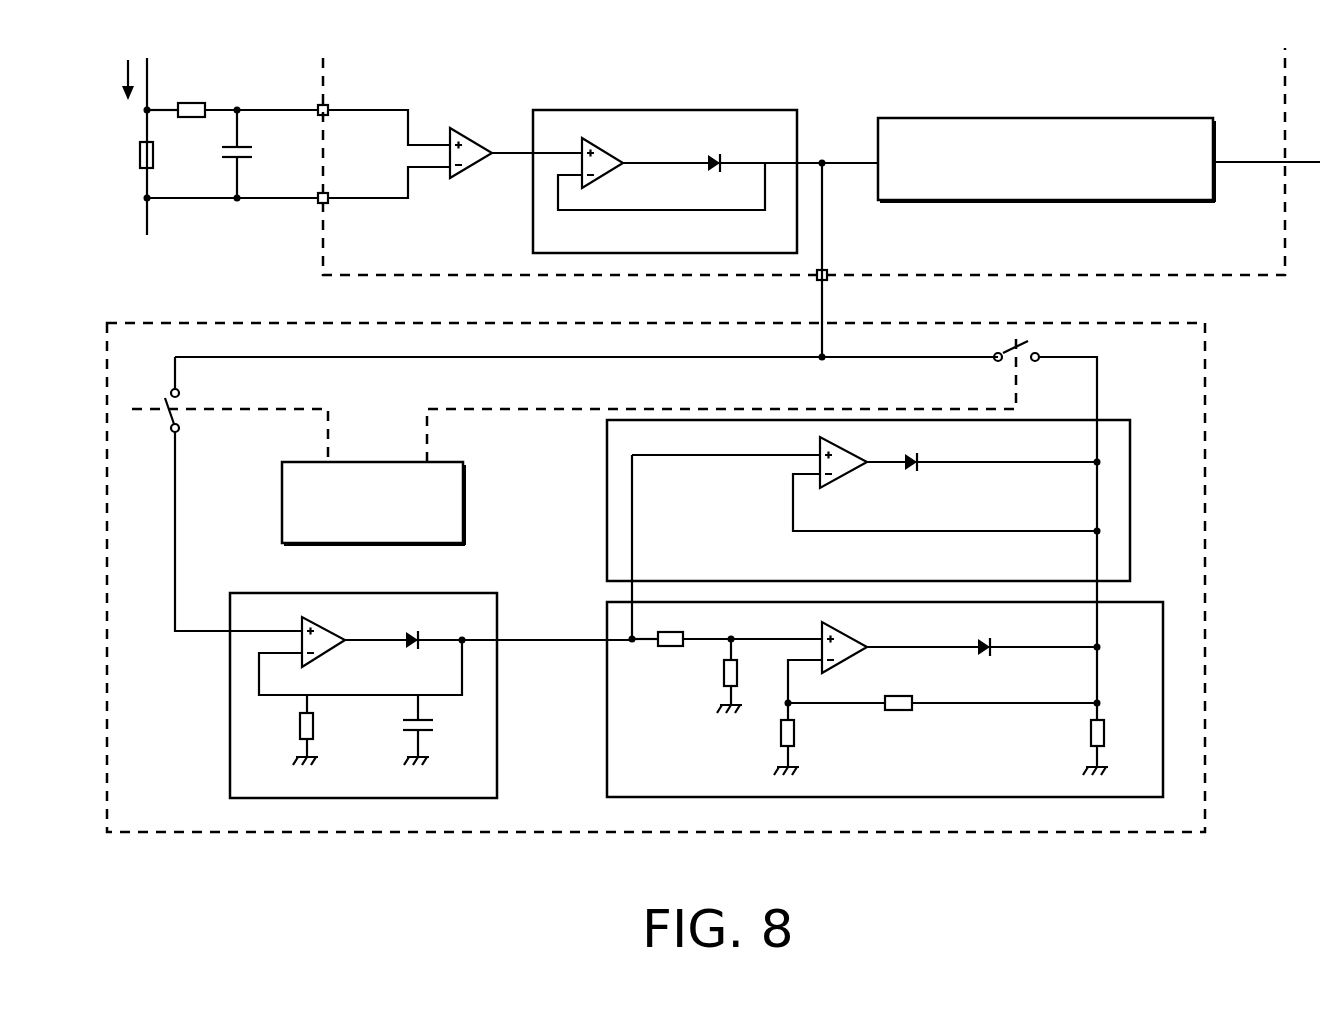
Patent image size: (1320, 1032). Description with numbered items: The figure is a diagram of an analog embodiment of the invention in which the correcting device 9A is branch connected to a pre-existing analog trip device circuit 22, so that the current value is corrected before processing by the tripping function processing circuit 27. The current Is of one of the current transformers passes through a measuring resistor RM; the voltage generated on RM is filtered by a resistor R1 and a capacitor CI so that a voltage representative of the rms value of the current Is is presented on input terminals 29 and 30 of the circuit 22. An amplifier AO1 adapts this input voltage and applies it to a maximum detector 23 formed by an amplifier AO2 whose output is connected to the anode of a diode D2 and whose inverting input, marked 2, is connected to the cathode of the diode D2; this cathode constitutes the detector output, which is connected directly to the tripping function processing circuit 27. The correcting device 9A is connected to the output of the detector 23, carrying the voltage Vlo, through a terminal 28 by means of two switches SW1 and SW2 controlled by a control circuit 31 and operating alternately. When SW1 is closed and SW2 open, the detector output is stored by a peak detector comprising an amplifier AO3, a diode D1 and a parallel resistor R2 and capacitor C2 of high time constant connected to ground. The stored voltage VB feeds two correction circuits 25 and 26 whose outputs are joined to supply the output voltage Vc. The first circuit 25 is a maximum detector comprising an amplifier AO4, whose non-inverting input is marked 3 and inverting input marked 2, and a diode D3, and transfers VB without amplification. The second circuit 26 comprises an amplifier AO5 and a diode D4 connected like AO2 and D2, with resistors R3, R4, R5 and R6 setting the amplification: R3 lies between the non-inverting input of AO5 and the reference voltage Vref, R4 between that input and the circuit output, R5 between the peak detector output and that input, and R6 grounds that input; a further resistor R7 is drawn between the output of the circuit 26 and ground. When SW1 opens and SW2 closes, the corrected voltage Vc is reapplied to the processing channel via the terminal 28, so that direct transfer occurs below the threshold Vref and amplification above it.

The circuit 22 is at (1233, 275).
The maximum detector 23 is at (640, 110).
The first correction circuit 25 is at (1130, 503).
The second correction circuit 26 is at (1163, 730).
The tripping function processing circuit 27 is at (1020, 118).
The terminal 28 is at (830, 272).
The input terminal 29 is at (327, 104).
The input terminal 30 is at (328, 204).
The control circuit 31 is at (447, 462).
The correcting device 9A is at (1205, 345).
The inverting input 2 is at (805, 474).
The non-inverting input 3 is at (805, 448).
The resistor R1 is at (192, 103).
The measuring resistor RM is at (124, 155).
The capacitor CI is at (246, 152).
The current Is is at (114, 80).
The amplifier AO1 is at (462, 128).
The amplifier AO2 is at (598, 138).
The amplifier AO3 is at (312, 617).
The amplifier AO4 is at (864, 478).
The amplifier AO5 is at (835, 625).
The diode D1 is at (410, 632).
The diode D2 is at (712, 154).
The diode D3 is at (910, 455).
The diode D4 is at (982, 640).
The resistor R2 is at (315, 723).
The resistor R3 is at (795, 725).
The resistor R4 is at (898, 696).
The resistor R5 is at (668, 632).
The resistor R6 is at (740, 665).
The resistor R7 is at (1105, 733).
The capacitor C2 is at (428, 725).
The switch SW1 is at (188, 411).
The switch SW2 is at (1018, 350).
The voltage Vlo is at (757, 362).
The output voltage Vc is at (1097, 398).
The stored voltage VB is at (580, 636).
The reference voltage Vref is at (827, 785).